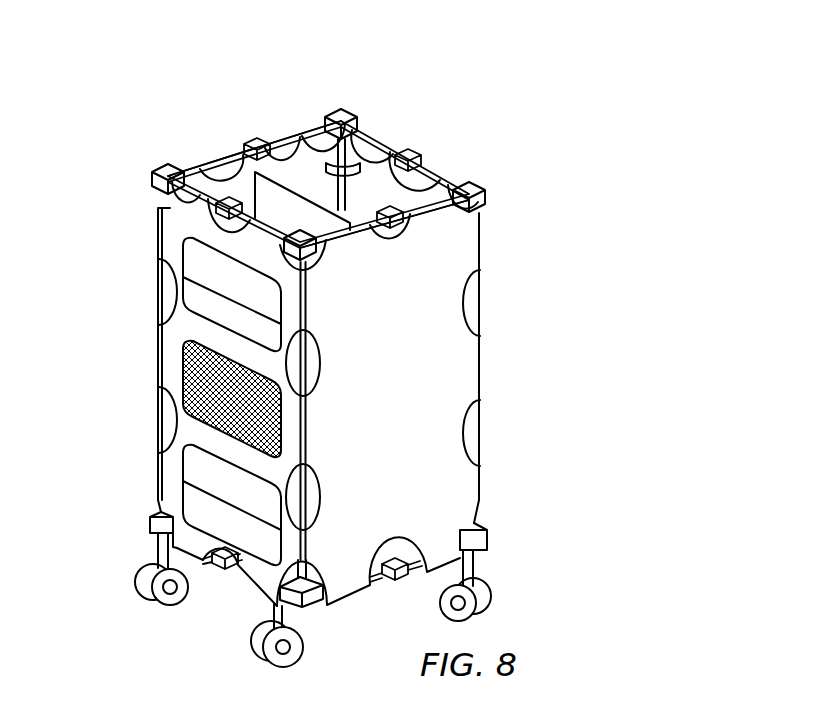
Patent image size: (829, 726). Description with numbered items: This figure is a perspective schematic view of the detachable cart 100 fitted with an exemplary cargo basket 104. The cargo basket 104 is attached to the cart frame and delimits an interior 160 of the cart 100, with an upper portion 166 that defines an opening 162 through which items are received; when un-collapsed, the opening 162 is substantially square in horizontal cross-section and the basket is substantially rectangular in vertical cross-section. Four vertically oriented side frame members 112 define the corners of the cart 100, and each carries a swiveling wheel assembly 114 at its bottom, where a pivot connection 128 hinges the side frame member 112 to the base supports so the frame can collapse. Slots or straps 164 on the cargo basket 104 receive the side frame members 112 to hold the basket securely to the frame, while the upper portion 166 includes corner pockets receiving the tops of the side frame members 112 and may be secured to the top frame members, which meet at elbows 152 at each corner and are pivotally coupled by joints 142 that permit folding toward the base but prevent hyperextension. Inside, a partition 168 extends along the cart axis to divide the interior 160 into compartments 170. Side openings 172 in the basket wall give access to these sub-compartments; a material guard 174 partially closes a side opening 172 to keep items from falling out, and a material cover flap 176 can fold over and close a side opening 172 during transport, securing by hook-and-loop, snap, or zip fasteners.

The detachable cart 100 is at (568, 250).
The cargo basket 104 is at (407, 362).
The side frame member 112 is at (491, 303).
The wheel assembly 114 is at (135, 580).
The pivot connection 128 is at (314, 610).
The joint 142 is at (254, 136).
The elbow 152 is at (470, 177).
The interior 160 is at (418, 117).
The opening 162 is at (277, 93).
The slot or strap 164 is at (355, 203).
The upper portion 166 is at (420, 233).
The partition 168 is at (291, 177).
The compartment 170 is at (227, 190).
The side opening 172 is at (215, 260).
The material guard 174 is at (207, 310).
The material cover flap 176 is at (225, 390).